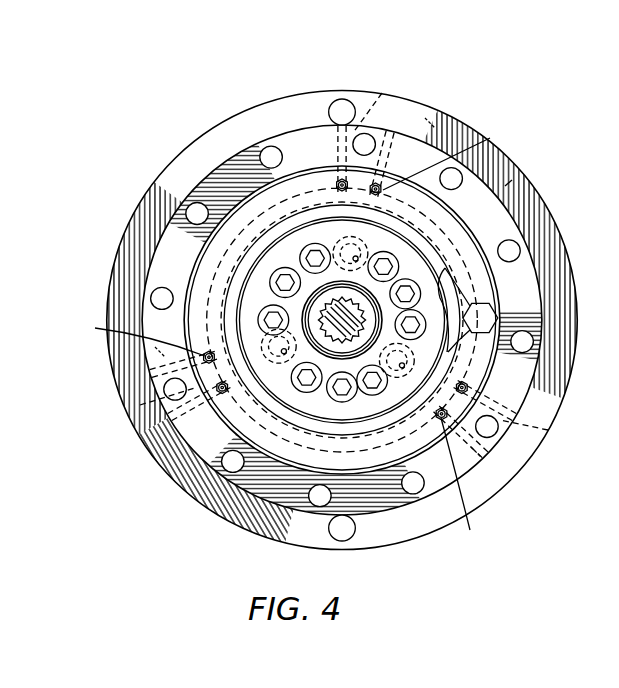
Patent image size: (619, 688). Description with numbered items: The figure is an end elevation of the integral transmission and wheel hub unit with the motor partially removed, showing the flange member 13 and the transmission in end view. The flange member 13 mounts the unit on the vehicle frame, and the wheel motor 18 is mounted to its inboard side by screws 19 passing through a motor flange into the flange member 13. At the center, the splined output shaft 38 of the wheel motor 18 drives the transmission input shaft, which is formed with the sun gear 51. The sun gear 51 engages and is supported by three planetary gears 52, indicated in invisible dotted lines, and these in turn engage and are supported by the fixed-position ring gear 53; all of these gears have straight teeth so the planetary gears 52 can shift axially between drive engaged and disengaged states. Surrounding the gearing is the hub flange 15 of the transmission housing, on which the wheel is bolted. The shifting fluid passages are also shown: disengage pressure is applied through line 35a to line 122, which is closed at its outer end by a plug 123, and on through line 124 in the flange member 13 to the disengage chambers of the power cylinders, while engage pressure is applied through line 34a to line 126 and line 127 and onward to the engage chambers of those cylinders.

The flange member 13 is at (397, 513).
The hub flange 15 is at (262, 528).
The wheel motor 18 is at (457, 272).
The screw 19 is at (494, 316).
The line 34a is at (291, 337).
The line 35a is at (336, 181).
The output shaft 38 is at (343, 316).
The sun gear 51 is at (308, 430).
The planetary gear 52 is at (418, 244).
The ring gear 53 is at (505, 186).
The line 122 is at (382, 93).
The plug 123 is at (343, 100).
The line 124 is at (312, 204).
The line 126 is at (430, 123).
The line 127 is at (200, 282).